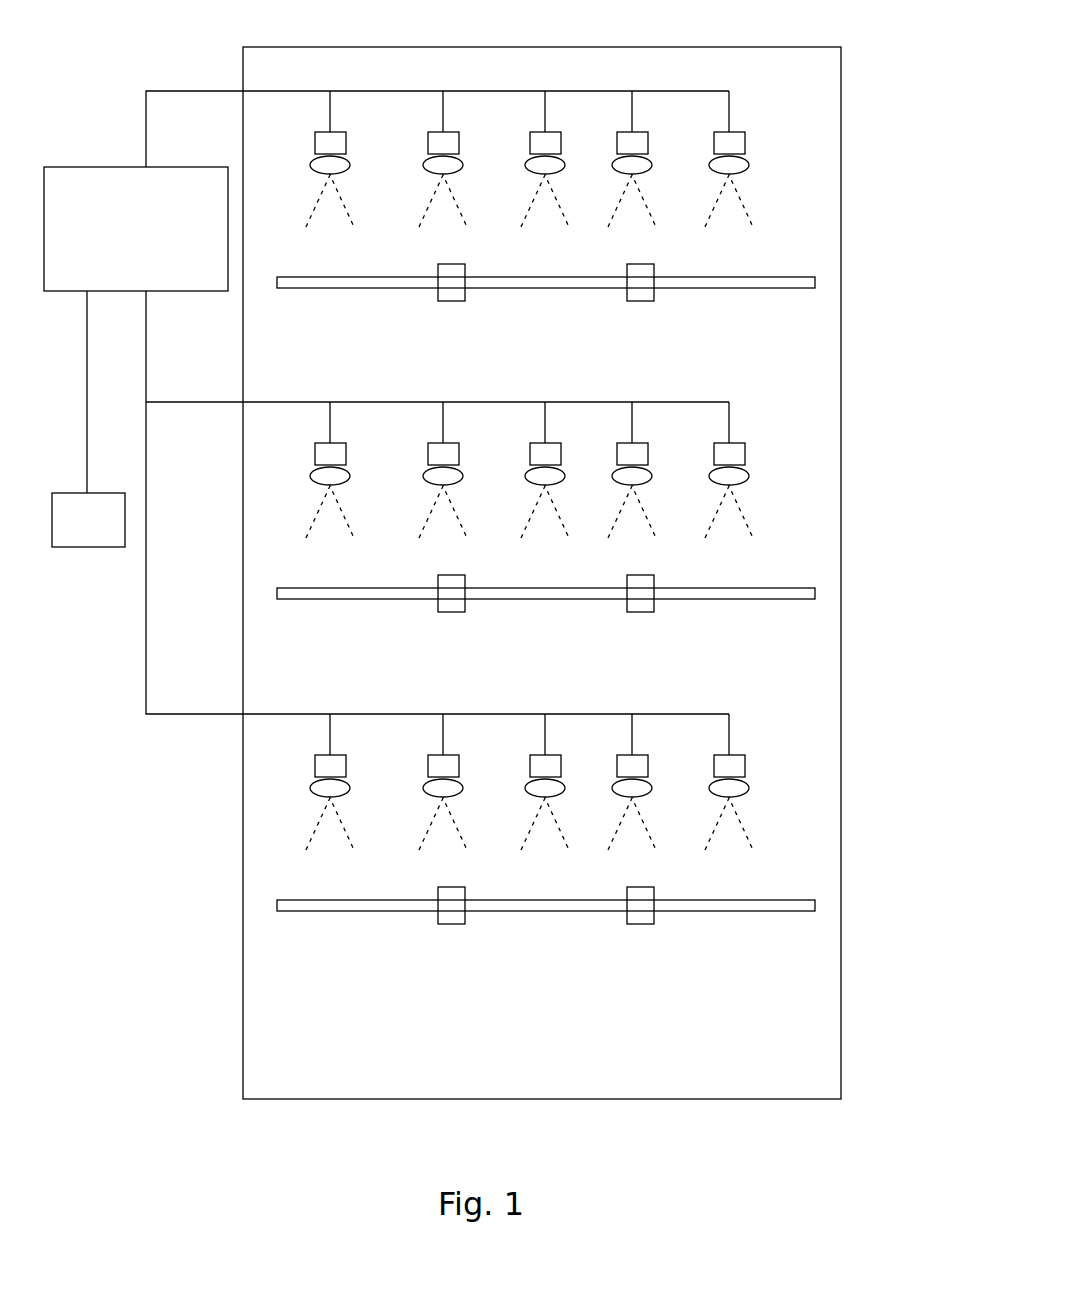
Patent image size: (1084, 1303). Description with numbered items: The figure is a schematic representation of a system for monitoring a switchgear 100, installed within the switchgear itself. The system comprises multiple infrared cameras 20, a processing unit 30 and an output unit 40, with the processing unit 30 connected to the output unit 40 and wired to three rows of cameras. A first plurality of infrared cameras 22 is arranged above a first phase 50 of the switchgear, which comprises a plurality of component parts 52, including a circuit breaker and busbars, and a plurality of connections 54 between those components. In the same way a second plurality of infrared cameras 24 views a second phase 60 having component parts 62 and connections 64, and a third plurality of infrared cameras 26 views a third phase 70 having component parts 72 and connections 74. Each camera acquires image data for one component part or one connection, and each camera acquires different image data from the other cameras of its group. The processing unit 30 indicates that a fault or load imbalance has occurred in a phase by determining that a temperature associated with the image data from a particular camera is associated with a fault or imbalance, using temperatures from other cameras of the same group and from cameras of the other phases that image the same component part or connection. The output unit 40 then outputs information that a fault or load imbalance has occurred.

The switchgear 100 is at (308, 1099).
The processing unit 30 is at (88, 166).
The output unit 40 is at (97, 548).
The infrared cameras 20 is at (619, 527).
The first plurality of infrared cameras 22 is at (630, 782).
The second plurality of infrared cameras 24 is at (631, 470).
The third plurality of infrared cameras 26 is at (773, 158).
The first phase 50 is at (612, 948).
The component parts 52 is at (546, 954).
The connections 54 is at (546, 948).
The second phase 60 is at (612, 635).
The component parts 62 is at (546, 641).
The connections 64 is at (546, 635).
The third phase 70 is at (612, 323).
The component parts 72 is at (767, 288).
The connections 74 is at (546, 323).